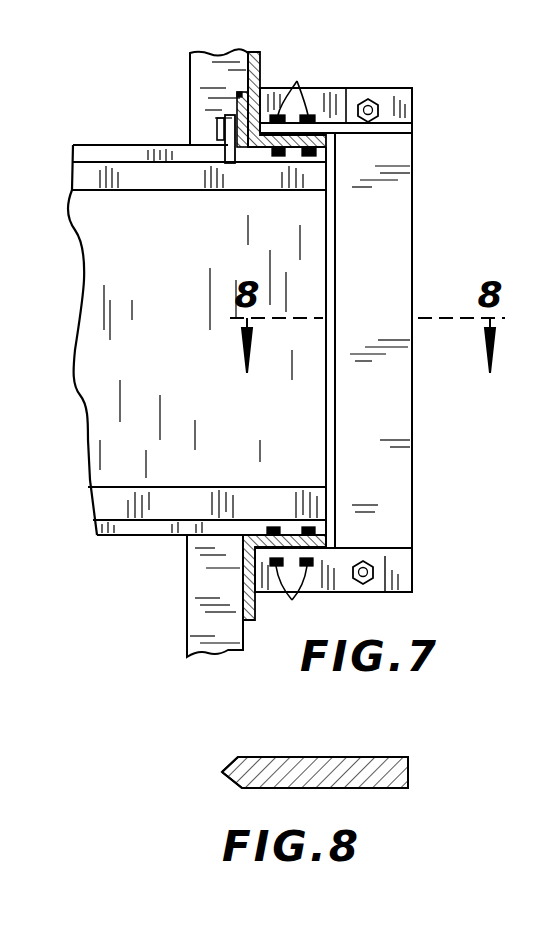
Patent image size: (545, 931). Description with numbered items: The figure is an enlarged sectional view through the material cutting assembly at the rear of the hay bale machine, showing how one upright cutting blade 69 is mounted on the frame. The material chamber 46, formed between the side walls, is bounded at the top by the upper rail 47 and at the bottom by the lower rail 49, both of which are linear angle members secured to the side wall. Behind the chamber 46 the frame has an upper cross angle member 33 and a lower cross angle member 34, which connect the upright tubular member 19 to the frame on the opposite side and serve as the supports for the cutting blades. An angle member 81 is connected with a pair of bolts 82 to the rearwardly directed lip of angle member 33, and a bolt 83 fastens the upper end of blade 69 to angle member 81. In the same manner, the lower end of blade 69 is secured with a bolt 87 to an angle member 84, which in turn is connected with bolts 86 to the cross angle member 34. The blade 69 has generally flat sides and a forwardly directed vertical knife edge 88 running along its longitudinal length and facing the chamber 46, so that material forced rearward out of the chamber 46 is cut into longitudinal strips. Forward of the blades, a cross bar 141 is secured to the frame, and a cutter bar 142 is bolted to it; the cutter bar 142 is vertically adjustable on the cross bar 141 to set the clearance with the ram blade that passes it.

In FIG. 7, the upright tubular member 19 is at (218, 583).
In FIG. 7, the angle member 33 is at (262, 78).
In FIG. 7, the angle member 34 is at (257, 603).
In FIG. 7, the chamber 46 is at (118, 373).
In FIG. 7, the upper rail 47 is at (98, 172).
In FIG. 7, the lower rail 49 is at (118, 500).
In FIG. 7, the cutting blade 69 is at (385, 443).
In FIG. 8, the cutting blade 69 is at (349, 758).
In FIG. 7, the angle member 81 is at (402, 100).
In FIG. 7, the bolts 82 is at (295, 89).
In FIG. 7, the bolt 83 is at (368, 99).
In FIG. 7, the angle member 84 is at (397, 575).
In FIG. 7, the bolts 86 is at (291, 593).
In FIG. 7, the bolt 87 is at (363, 584).
In FIG. 7, the knife edge 88 is at (330, 407).
In FIG. 8, the knife edge 88 is at (222, 771).
In FIG. 7, the cross bar 141 is at (244, 92).
In FIG. 7, the cutter bar 142 is at (230, 140).